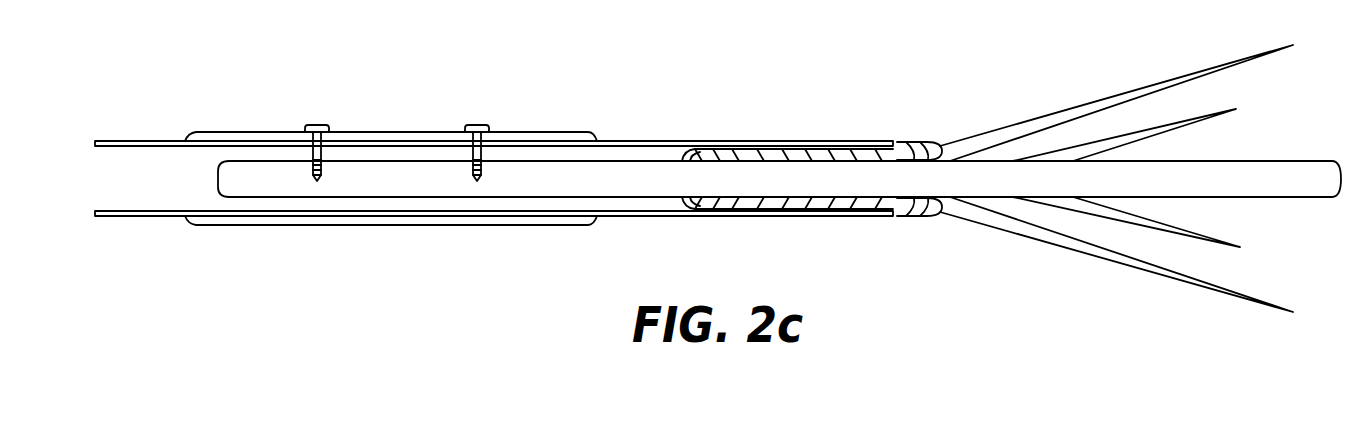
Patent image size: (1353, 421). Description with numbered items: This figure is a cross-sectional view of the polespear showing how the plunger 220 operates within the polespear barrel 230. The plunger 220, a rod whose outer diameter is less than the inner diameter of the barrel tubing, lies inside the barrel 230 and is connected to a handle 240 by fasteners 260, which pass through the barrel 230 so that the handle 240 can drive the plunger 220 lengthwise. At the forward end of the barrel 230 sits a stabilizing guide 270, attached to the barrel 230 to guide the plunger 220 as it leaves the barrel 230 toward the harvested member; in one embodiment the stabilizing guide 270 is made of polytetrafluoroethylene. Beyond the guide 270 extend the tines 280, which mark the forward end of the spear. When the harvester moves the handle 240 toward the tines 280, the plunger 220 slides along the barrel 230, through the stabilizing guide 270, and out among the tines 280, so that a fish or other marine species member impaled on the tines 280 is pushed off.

The plunger 220 is at (647, 173).
The polespear barrel 230 is at (653, 217).
The handle 240 is at (275, 225).
The fasteners 260 is at (473, 125).
The stabilizing guide 270 is at (842, 155).
The tines 280 is at (1238, 110).